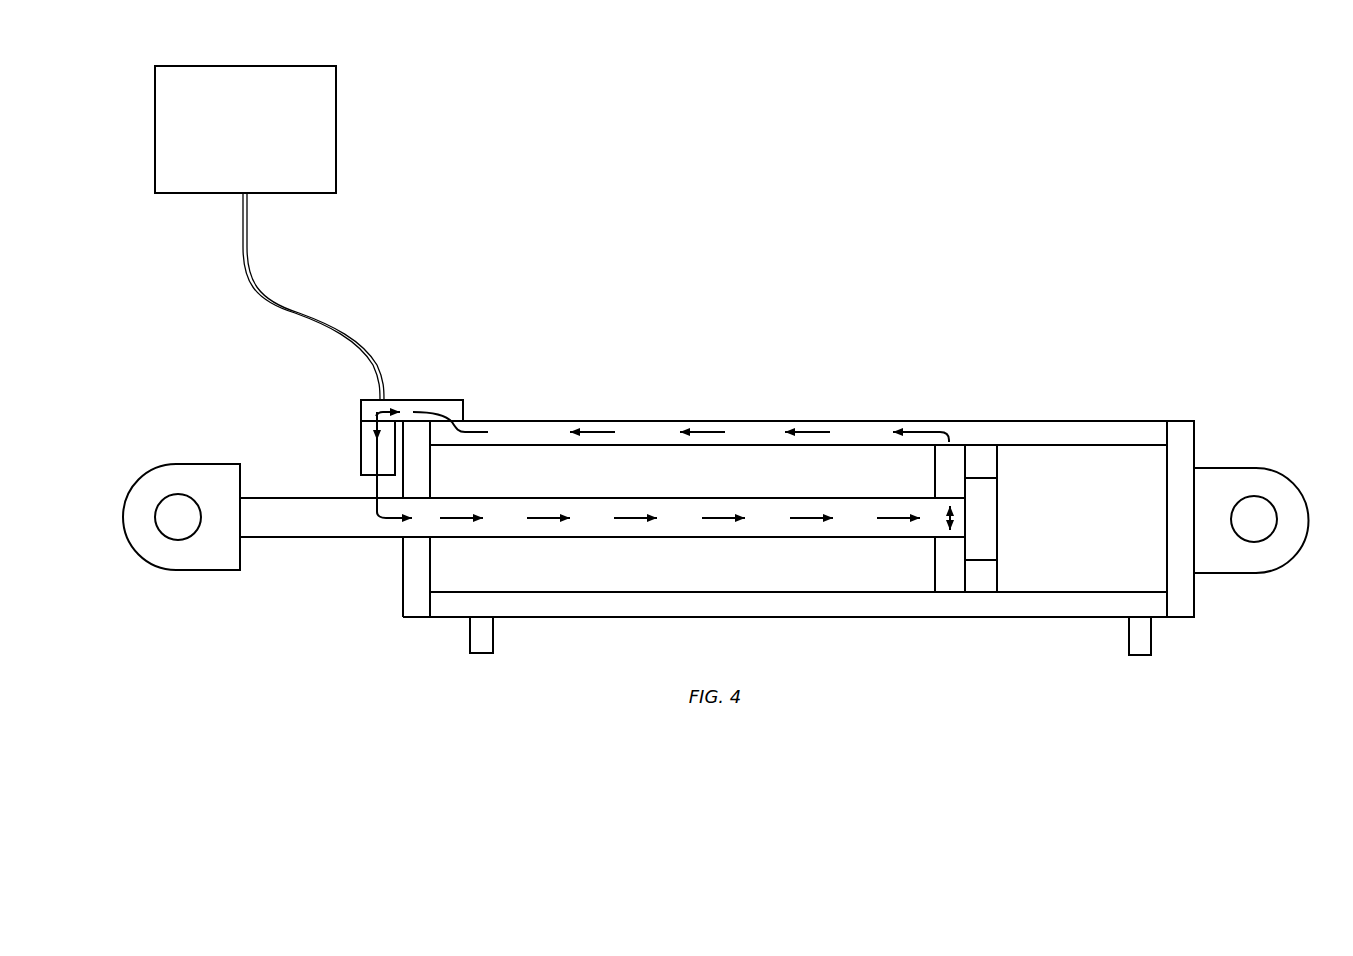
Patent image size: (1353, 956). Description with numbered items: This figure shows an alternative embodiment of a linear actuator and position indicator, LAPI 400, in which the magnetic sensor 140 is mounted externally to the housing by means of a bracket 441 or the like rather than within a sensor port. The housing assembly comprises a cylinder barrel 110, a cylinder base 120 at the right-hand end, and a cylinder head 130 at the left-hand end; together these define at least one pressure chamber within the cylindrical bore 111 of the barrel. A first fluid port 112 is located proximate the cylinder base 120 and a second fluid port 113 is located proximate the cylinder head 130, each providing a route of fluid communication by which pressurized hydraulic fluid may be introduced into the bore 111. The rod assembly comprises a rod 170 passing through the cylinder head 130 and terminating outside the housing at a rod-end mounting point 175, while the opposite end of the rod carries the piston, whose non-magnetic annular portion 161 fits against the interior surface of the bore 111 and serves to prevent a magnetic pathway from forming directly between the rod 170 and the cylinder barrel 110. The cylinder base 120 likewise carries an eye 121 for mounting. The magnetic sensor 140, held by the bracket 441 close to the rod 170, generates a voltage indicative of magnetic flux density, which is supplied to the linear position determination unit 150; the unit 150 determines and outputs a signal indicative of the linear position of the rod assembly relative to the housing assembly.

The LAPI 400 is at (714, 378).
The linear position determination unit 150 is at (269, 233).
The bracket 441 is at (430, 400).
The magnetic sensor 140 is at (361, 447).
The cylinder barrel 110 is at (790, 617).
The cylindrical bore 111 is at (687, 592).
The first fluid port 112 is at (1130, 655).
The second fluid port 113 is at (470, 653).
The cylinder base 120 is at (1183, 594).
The end cap eye 121 is at (1268, 468).
The cylinder head 130 is at (412, 578).
The annular portion 161 is at (1000, 457).
The rod 170 is at (323, 530).
The rod-end mounting point 175 is at (157, 568).